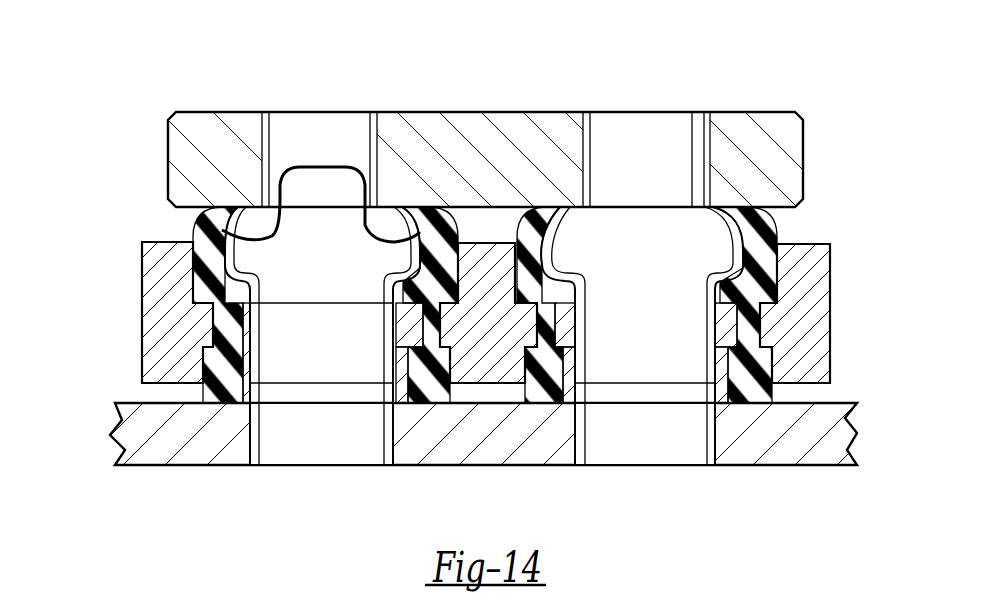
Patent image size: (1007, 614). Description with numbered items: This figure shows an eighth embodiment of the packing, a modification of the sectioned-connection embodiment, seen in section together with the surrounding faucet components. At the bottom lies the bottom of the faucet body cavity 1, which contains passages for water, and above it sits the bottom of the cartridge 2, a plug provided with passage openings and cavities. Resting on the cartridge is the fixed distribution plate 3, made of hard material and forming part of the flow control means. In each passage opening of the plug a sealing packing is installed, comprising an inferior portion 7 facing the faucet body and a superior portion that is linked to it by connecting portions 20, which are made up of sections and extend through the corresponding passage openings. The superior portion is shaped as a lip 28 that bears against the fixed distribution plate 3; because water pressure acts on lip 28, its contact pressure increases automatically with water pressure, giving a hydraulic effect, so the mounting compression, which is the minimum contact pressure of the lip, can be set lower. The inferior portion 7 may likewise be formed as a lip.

The bottom of a faucet body cavity 1 is at (787, 452).
The bottom of a cartridge 2 is at (813, 327).
The fixed distribution plate 3 is at (740, 127).
The inferior portion 7 is at (208, 396).
The connecting portions 20 is at (230, 325).
The lip 28 is at (321, 193).